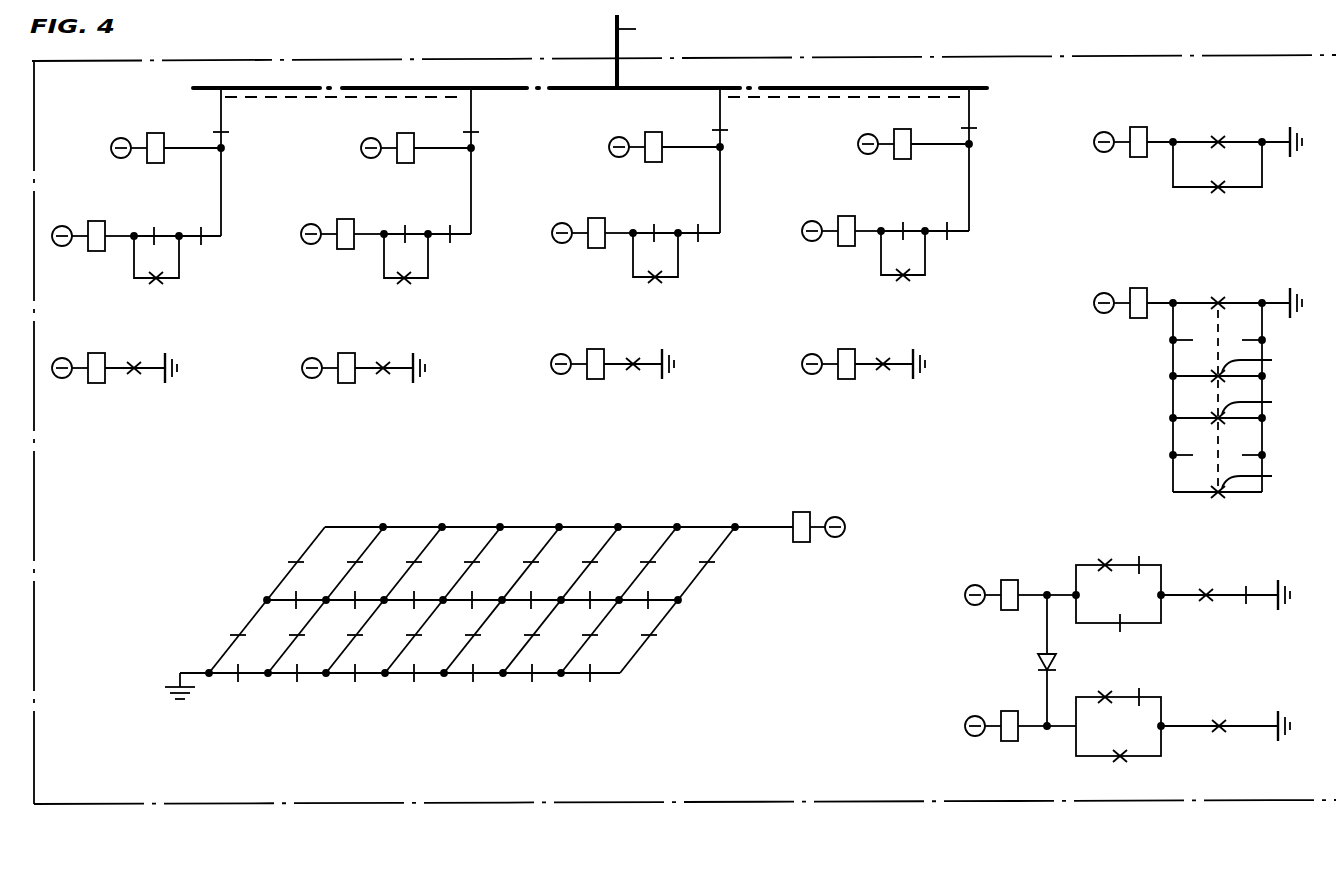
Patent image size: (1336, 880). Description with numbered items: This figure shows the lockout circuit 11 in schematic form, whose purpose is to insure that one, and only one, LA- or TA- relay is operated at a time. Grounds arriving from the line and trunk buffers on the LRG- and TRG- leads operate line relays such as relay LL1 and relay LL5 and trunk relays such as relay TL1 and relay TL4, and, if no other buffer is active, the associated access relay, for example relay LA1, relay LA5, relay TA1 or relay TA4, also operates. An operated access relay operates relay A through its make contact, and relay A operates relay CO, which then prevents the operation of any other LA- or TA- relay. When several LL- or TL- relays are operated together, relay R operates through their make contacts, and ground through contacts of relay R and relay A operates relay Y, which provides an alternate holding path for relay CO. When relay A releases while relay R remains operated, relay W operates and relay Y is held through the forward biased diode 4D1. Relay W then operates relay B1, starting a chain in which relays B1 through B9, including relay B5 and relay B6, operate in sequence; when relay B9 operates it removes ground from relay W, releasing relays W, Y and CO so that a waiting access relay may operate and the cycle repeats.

The lockout circuit 11 is at (312, 62).
The diode 4D1 is at (1029, 660).
The relay R is at (819, 515).
The relay W is at (1006, 585).
The relay Y is at (1006, 715).
The relay A is at (1210, 383).
The relay CO is at (1198, 150).
The relay B1 is at (114, 368).
The relay B5 is at (363, 368).
The relay B6 is at (612, 365).
The relay B9 is at (863, 365).
The relay LL1 is at (167, 137).
The relay LL5 is at (417, 137).
The relay TL1 is at (666, 136).
The relay TL4 is at (915, 134).
The relay LA1 is at (93, 227).
The relay LA5 is at (342, 225).
The relay TA1 is at (592, 224).
The relay TA4 is at (841, 222).